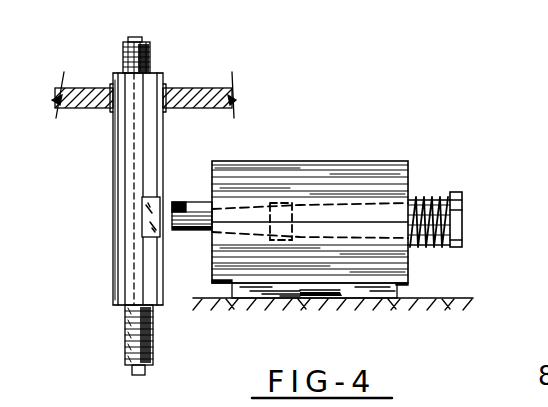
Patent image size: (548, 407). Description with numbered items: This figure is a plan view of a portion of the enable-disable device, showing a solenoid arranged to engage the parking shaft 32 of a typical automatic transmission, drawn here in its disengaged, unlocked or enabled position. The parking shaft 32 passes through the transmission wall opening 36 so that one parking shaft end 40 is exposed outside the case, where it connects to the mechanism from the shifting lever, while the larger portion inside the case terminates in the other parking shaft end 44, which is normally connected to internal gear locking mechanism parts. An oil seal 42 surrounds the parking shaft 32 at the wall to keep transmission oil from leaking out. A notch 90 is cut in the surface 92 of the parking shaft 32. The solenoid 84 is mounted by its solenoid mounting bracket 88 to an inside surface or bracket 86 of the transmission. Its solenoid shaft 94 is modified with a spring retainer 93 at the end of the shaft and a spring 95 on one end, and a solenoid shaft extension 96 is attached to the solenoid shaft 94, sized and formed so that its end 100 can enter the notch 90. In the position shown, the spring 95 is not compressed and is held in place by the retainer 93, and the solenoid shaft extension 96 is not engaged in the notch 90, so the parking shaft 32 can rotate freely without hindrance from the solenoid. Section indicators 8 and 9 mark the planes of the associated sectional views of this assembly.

The parking shaft 32 is at (113, 277).
The transmission wall opening 36 is at (180, 90).
The parking shaft end 40 is at (123, 46).
The oil seal 42 is at (163, 86).
The parking shaft end 44 is at (125, 335).
The solenoid 84 is at (318, 136).
The inside surface or bracket 86 is at (425, 298).
The solenoid mounting bracket 88 is at (378, 290).
The notch 90 is at (143, 218).
The surface 92 is at (138, 135).
The spring retainer 93 is at (463, 202).
The solenoid shaft 94 is at (336, 207).
The spring 95 is at (425, 198).
The solenoid shaft extension 96 is at (216, 197).
The end of the solenoid shaft extension 100 is at (188, 207).
The section line 8- 8 is at (168, 168).
The section line 9- 9 is at (168, 192).